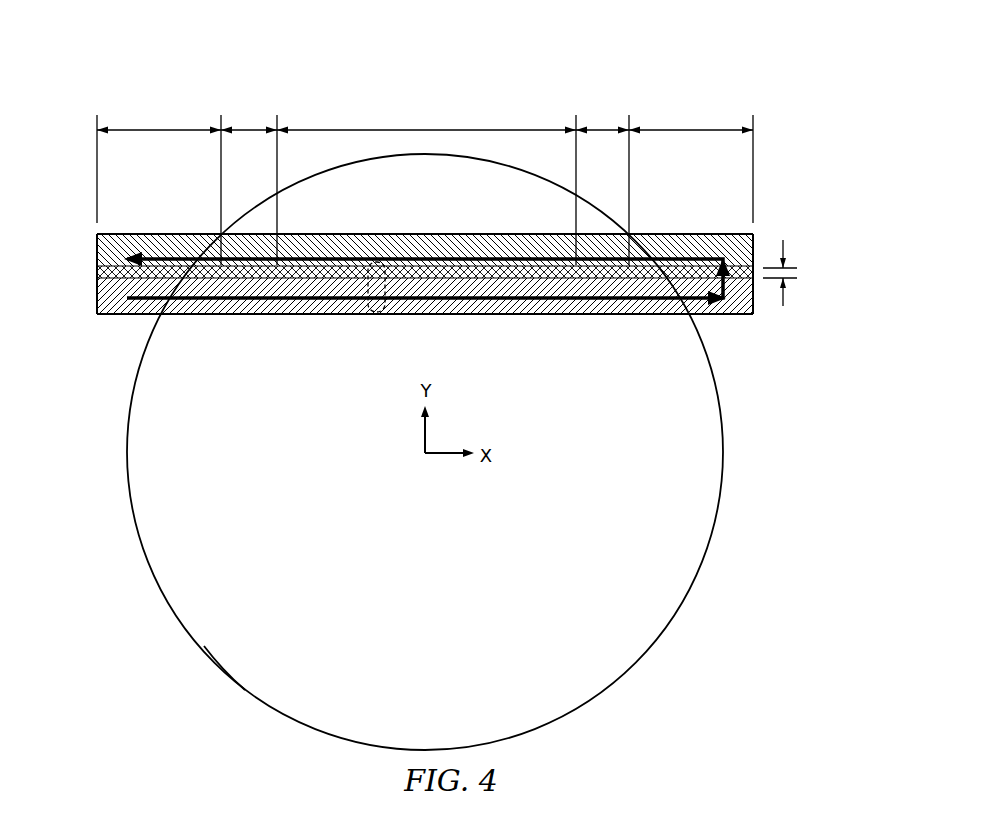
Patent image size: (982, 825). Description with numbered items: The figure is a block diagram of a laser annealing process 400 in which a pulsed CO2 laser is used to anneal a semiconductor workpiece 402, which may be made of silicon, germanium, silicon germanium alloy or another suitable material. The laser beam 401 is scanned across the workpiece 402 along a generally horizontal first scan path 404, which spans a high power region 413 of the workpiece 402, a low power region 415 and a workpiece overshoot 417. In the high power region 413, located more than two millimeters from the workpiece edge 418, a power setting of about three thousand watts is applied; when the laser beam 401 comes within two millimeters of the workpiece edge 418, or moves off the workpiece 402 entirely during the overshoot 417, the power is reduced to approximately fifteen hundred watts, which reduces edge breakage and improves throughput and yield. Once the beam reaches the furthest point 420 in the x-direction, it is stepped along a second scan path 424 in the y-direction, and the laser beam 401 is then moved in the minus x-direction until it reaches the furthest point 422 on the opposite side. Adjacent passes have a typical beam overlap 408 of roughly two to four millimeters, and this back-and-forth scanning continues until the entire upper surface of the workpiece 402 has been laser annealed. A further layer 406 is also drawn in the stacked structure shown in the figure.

The laser annealing process 400 is at (662, 50).
The laser beam 401 is at (378, 262).
The workpiece 402 is at (723, 452).
The first scan path 404 is at (128, 316).
The upper layer 406 is at (97, 252).
The beam overlap 408 is at (797, 273).
The high power region 413 is at (424, 128).
The low power region 415 is at (250, 128).
The workpiece overshoot 417 is at (160, 128).
The workpiece edge 418 is at (218, 668).
The furthest point in the x-direction 420 is at (753, 181).
The furthest point in the minus x-direction 422 is at (97, 172).
The second scan path 424 is at (727, 283).